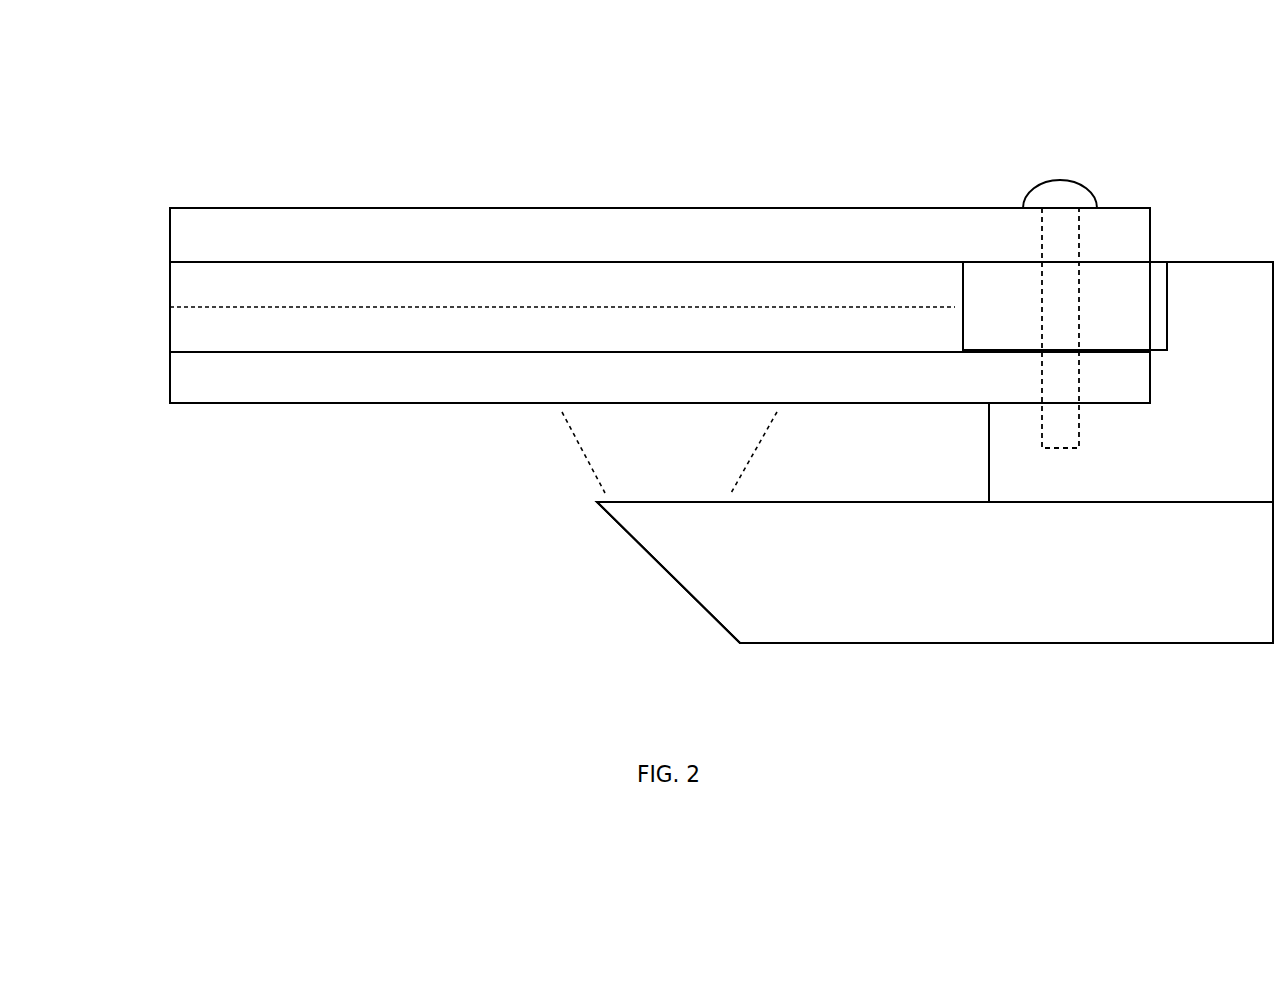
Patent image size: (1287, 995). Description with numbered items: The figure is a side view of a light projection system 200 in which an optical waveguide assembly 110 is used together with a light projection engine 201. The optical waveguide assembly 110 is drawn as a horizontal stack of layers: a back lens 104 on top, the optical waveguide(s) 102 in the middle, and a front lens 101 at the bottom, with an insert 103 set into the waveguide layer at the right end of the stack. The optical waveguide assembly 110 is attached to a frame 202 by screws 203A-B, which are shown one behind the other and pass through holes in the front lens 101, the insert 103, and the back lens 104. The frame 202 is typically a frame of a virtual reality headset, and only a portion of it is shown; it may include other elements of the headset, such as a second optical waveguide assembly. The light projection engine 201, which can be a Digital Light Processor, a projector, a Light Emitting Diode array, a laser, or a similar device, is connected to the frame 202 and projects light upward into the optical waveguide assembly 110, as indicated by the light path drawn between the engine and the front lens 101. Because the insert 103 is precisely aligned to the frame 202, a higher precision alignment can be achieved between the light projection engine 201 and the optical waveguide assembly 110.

The light projection system 200 is at (621, 92).
The back lens 104 is at (185, 207).
The optical waveguide(s) 102 is at (753, 270).
The front lens 101 is at (792, 397).
The optical waveguide assembly 110 is at (146, 216).
The insert 103 is at (1155, 305).
The screws 203A-B is at (1060, 180).
The frame 202 is at (1180, 466).
The light projection engine 201 is at (1165, 583).